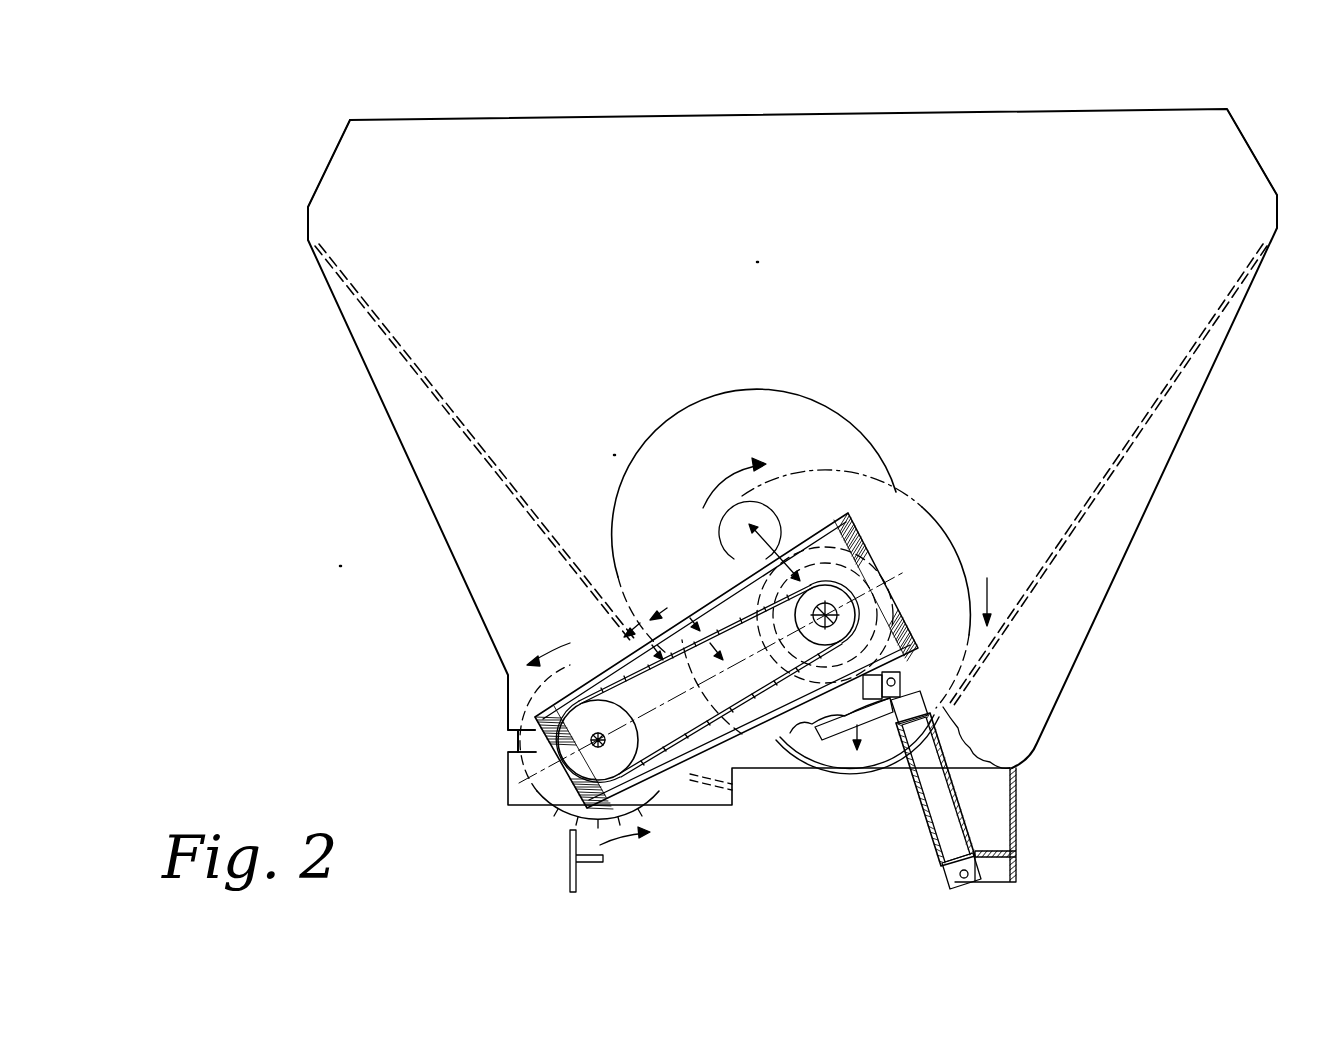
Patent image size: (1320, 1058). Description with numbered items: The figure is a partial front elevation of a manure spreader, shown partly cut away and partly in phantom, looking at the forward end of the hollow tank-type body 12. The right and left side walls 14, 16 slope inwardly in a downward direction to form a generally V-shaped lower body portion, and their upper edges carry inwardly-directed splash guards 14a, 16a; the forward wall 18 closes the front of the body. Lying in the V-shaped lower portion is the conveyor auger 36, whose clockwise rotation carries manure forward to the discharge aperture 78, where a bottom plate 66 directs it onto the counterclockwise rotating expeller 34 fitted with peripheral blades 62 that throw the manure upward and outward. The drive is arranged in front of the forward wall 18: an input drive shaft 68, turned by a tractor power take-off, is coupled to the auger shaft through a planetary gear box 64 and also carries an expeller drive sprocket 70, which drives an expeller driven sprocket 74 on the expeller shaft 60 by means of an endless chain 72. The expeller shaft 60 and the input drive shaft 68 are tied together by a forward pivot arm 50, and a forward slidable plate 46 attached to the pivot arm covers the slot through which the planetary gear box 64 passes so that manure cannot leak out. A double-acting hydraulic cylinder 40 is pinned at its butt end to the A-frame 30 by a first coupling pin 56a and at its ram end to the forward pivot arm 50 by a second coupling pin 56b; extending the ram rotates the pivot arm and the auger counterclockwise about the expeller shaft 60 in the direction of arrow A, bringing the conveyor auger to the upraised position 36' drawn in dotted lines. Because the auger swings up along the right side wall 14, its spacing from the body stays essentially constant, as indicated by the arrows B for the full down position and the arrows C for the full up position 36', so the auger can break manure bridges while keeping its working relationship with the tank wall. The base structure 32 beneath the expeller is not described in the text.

The tank-type body 12 is at (1152, 106).
The right side wall 14 is at (435, 395).
The splash guard 14a is at (326, 172).
The left side wall 16 is at (1150, 428).
The splash guard 16a is at (1248, 142).
The forward wall 18 is at (966, 231).
The A-frame 30 is at (1022, 795).
The base plate 32 is at (763, 792).
The expeller 34 is at (433, 722).
The conveyor auger 36 is at (871, 602).
The conveyor auger in upraised position 36' is at (754, 483).
The double-acting hydraulic cylinder 40 is at (940, 845).
The forward slidable plate 46 is at (690, 668).
The forward pivot arm 50 is at (703, 770).
The first coupling pin 56a is at (975, 877).
The second coupling pin 56b is at (905, 680).
The expeller shaft 60 is at (560, 760).
The blades 62 is at (508, 749).
The planetary gear box 64 is at (847, 545).
The bottom plate 66 is at (785, 778).
The input drive shaft 68 is at (822, 602).
The expeller drive sprocket 70 is at (838, 622).
The endless chain 72 is at (697, 640).
The expeller driven sprocket 74 is at (652, 808).
The discharge aperture 78 is at (832, 777).
The arrow A is at (790, 560).
The arrows B is at (870, 780).
The arrows C is at (625, 638).